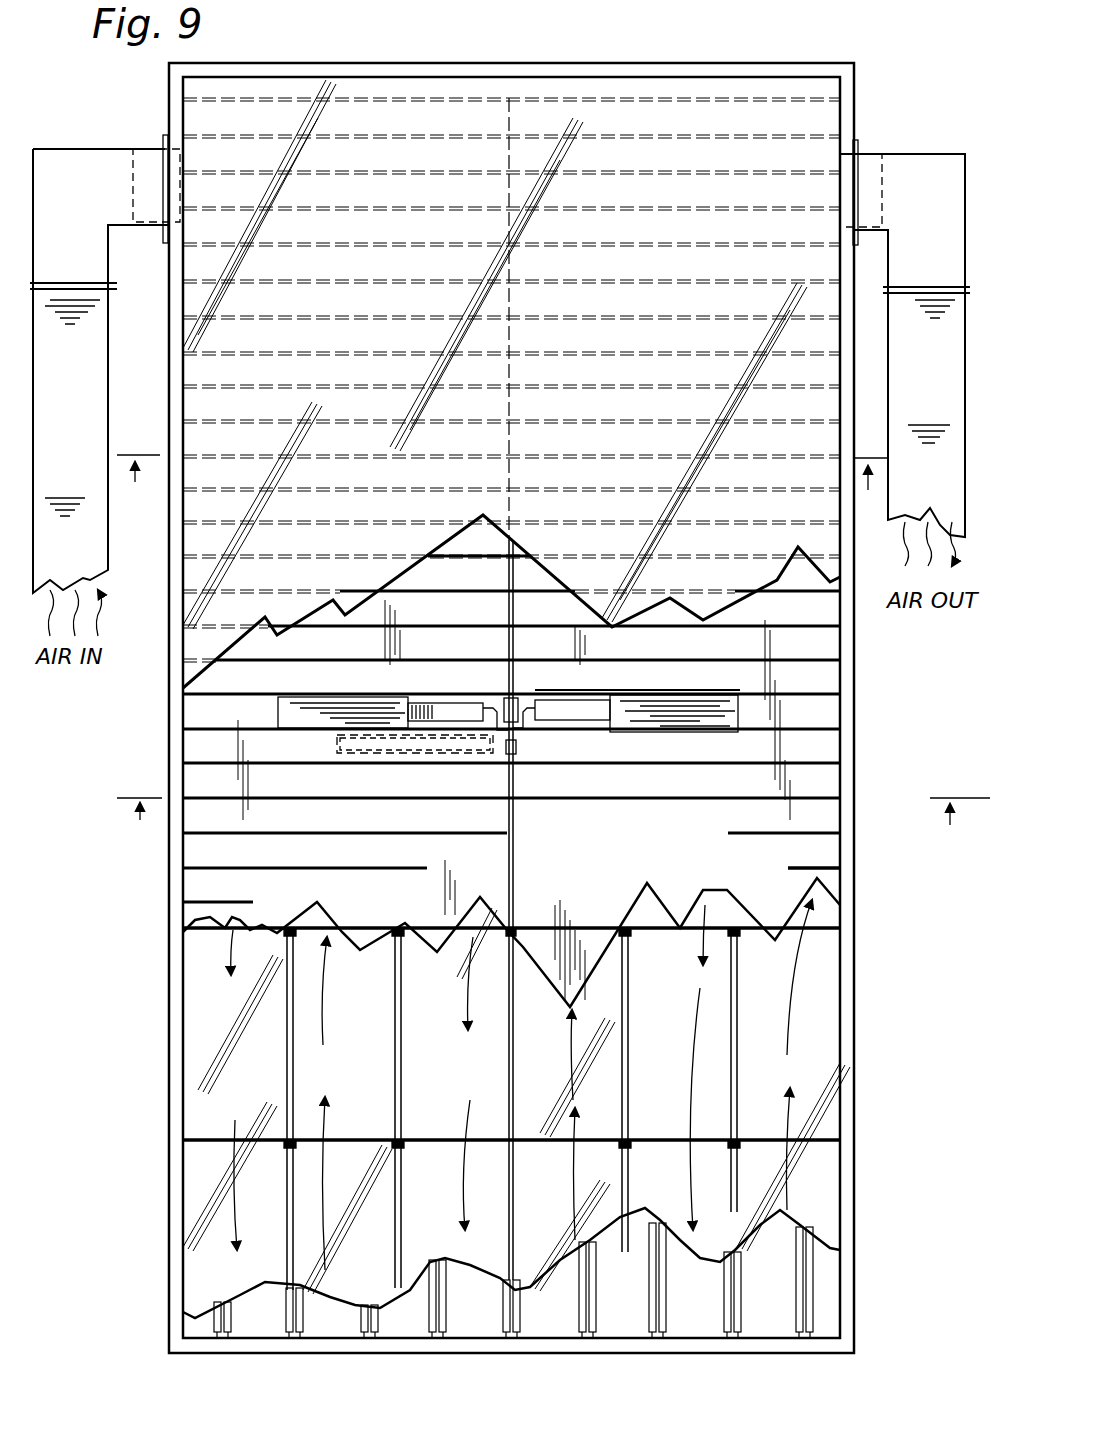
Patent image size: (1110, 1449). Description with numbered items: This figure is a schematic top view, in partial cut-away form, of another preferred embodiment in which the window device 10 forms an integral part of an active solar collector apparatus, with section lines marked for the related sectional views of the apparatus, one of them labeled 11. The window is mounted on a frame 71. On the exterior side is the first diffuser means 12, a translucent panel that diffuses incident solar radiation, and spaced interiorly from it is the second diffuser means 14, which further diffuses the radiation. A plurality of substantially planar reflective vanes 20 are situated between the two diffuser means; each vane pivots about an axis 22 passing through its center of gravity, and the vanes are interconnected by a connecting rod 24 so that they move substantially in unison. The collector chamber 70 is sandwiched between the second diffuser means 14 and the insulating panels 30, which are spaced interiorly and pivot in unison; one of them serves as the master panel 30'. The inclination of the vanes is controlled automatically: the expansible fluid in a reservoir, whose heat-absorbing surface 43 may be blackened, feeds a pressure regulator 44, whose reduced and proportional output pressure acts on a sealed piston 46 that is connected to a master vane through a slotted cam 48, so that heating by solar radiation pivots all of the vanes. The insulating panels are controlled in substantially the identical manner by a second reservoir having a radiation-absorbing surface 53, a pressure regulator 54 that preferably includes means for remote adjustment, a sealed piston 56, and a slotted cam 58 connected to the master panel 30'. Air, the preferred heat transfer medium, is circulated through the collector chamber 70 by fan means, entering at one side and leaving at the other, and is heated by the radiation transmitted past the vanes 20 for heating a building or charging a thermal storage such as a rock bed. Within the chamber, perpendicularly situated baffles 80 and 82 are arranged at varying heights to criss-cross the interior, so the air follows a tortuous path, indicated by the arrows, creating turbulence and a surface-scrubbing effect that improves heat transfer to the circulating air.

The window device 10 is at (553, 627).
The section line 11- 11 is at (139, 796).
The first diffuser means 12 is at (820, 121).
The second diffuser means 14 is at (813, 818).
The reflective vanes 20 is at (680, 100).
The axis 22 is at (790, 867).
The connecting rod 24 is at (515, 856).
The insulating panels 30 is at (513, 1284).
The master panel 30' is at (540, 1309).
The optional surface 43 is at (295, 712).
The pressure regulator 44 is at (408, 698).
The sealed piston 46 is at (518, 745).
The slotted cam 48 is at (563, 692).
The radiation-absorbing surface 53 is at (730, 718).
The pressure regulator 54 is at (588, 712).
The sealed piston 56 is at (456, 742).
The slotted cam 58 is at (475, 753).
The collector chamber 70 is at (310, 1025).
The frame 71 is at (510, 63).
The baffles 80 is at (282, 1072).
The baffles 82 is at (165, 157).